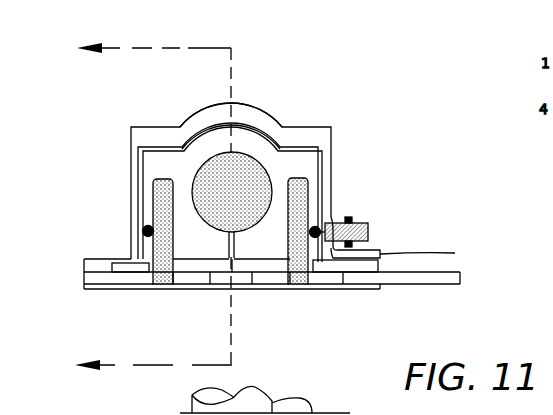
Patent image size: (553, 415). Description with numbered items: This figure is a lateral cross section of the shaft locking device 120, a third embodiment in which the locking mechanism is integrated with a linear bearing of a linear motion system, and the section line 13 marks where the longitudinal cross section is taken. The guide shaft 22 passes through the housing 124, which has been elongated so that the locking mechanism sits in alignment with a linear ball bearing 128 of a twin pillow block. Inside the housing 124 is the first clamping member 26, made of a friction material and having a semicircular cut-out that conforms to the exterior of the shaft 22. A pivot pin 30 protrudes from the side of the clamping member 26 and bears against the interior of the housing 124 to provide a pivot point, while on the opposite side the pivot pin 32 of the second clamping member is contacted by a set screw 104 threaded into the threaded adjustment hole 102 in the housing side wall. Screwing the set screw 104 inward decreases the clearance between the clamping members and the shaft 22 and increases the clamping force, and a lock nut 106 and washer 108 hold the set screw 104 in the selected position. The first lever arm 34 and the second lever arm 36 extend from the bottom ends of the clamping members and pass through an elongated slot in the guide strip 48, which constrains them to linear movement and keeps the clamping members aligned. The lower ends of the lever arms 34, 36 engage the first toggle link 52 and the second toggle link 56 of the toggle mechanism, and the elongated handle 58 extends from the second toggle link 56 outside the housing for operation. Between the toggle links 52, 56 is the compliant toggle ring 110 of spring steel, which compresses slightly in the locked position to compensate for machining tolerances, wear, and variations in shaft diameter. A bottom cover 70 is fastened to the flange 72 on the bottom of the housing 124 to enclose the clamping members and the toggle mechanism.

The section line 13 is at (137, 209).
The guide shaft 22 is at (232, 192).
The first clamping member 26 is at (178, 165).
The pivot pin 30 is at (143, 230).
The pivot pin 32 is at (313, 268).
The first lever arm 34 is at (163, 182).
The second lever arm 36 is at (297, 185).
The guide strip 48 is at (135, 268).
The first toggle link 52 is at (197, 278).
The second toggle link 56 is at (267, 282).
The elongated handle 58 is at (430, 277).
The bottom cover 70 is at (110, 291).
The flange 72 is at (102, 278).
The threaded adjustment hole 102 is at (332, 221).
The set screw 104 is at (368, 233).
The lock nut 106 is at (352, 219).
The washer 108 is at (455, 253).
The compliant toggle ring 110 is at (242, 278).
The shaft locking device 120 is at (349, 114).
The housing 124 is at (326, 137).
The linear ball bearing 128 is at (215, 118).